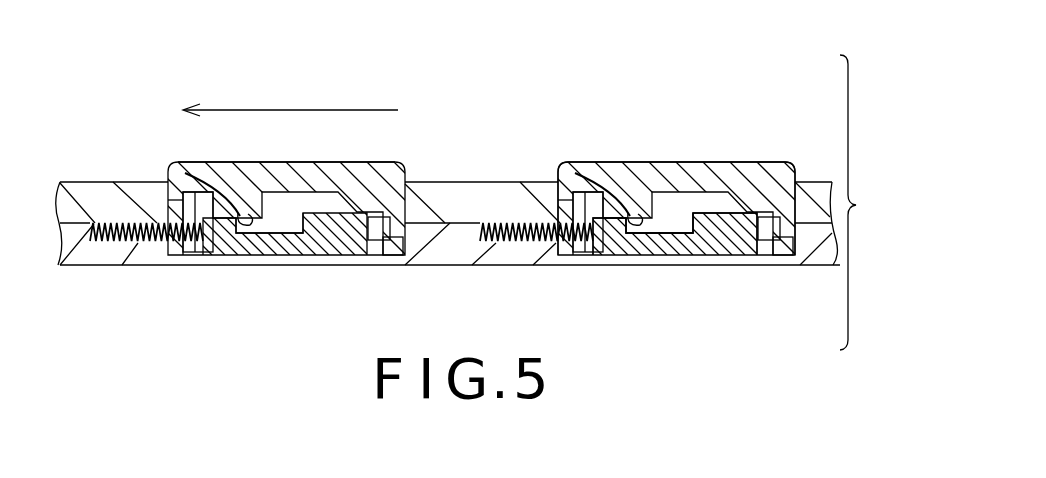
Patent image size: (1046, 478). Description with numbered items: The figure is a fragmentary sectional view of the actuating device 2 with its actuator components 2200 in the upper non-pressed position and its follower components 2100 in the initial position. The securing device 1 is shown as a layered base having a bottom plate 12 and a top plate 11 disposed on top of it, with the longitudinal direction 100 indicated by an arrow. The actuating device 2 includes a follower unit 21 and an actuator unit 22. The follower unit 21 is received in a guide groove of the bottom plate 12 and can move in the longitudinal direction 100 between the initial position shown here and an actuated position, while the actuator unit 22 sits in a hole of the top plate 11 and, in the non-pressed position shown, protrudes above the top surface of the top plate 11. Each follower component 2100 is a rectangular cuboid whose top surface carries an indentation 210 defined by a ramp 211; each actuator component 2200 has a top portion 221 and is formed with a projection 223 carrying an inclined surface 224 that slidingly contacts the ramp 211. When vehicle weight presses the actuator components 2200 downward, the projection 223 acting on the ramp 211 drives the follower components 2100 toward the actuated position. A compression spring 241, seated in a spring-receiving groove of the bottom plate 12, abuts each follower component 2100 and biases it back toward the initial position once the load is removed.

The securing device 1 is at (510, 172).
The top plate 11 is at (455, 200).
The bottom plate 12 is at (457, 250).
The actuating device 2 is at (857, 202).
The follower unit 21 is at (748, 273).
The actuator unit 22 is at (770, 130).
The longitudinal direction 100 is at (275, 108).
The indentation 210 is at (276, 236).
The follower component 2100 is at (313, 250).
The ramp 211 is at (212, 245).
The actuator component 2200 is at (200, 162).
The top portion 221 is at (270, 173).
The projection 223 is at (246, 212).
The inclined surface 224 is at (345, 200).
The compression spring 241 is at (130, 243).